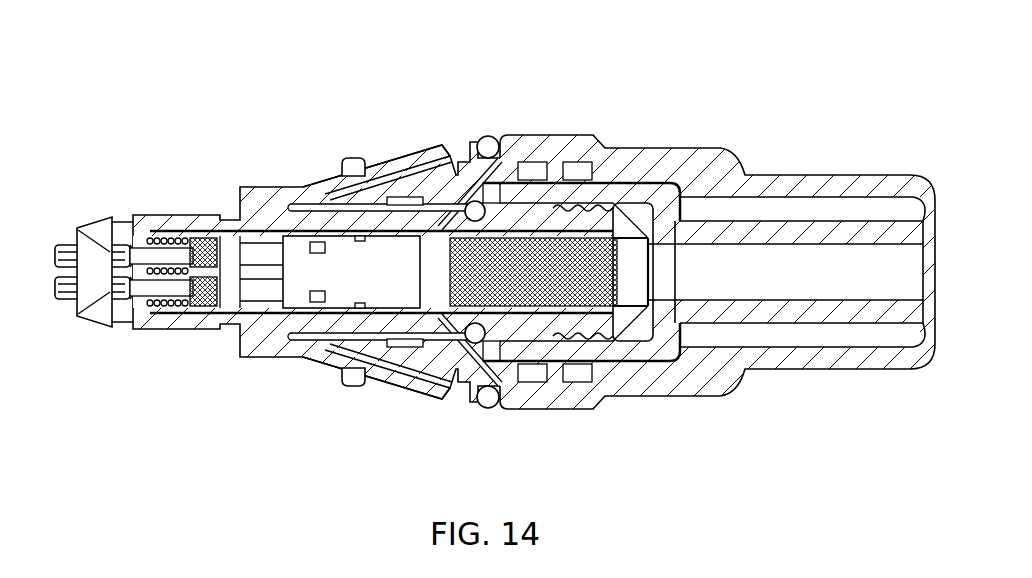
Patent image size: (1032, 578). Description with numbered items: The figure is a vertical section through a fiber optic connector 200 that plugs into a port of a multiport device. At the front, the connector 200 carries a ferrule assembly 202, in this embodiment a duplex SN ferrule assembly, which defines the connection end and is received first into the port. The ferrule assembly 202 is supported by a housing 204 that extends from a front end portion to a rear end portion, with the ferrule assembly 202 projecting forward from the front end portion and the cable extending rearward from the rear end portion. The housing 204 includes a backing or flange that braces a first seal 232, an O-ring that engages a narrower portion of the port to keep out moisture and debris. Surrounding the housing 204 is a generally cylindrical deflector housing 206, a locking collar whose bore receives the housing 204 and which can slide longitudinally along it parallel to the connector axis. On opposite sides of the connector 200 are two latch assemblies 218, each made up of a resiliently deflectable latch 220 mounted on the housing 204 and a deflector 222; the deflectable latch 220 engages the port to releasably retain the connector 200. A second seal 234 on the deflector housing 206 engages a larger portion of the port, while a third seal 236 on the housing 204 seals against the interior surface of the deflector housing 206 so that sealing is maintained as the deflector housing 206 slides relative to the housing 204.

The connector 200 is at (118, 84).
The ferrule assembly 202 is at (53, 331).
The housing 204 is at (85, 202).
The deflector housing 206 is at (533, 128).
The latch assembly 218 is at (339, 280).
The deflectable latch 220 is at (413, 153).
The deflector 222 is at (347, 160).
The first seal 232 is at (233, 333).
The second seal 234 is at (484, 138).
The third seal 236 is at (481, 338).